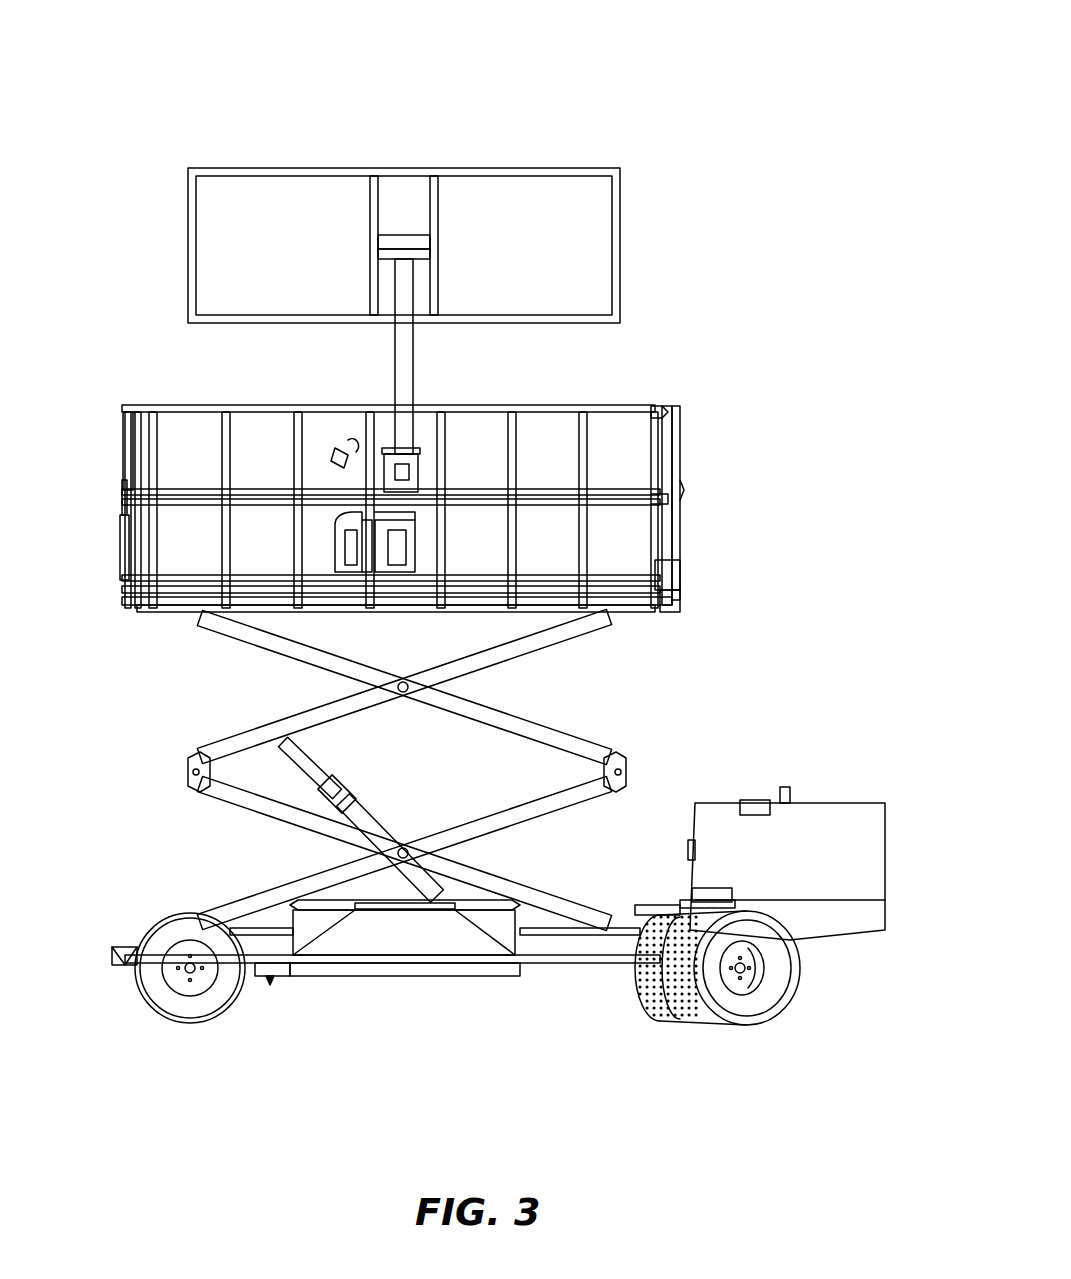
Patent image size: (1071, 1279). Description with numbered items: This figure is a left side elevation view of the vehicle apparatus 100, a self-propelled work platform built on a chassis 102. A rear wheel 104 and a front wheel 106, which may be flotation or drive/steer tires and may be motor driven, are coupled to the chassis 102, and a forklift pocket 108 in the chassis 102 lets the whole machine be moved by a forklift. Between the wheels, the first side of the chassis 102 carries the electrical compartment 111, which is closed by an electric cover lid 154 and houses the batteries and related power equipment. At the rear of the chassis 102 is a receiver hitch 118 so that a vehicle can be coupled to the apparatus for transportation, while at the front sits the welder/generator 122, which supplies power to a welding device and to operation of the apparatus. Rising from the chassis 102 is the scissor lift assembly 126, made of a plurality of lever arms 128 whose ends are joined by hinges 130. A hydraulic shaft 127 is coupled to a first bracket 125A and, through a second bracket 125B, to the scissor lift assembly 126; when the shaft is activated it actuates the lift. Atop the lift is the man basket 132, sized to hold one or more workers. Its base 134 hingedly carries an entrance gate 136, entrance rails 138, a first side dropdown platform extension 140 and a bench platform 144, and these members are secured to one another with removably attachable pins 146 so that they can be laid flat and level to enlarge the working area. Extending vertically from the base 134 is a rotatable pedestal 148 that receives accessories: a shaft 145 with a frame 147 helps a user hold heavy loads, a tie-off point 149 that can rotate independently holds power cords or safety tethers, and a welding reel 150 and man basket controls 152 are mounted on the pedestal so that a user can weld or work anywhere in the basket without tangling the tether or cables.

The vehicle apparatus 100 is at (198, 68).
The chassis 102 is at (392, 977).
The rear wheel 104 is at (178, 1015).
The front wheel 106 is at (778, 995).
The forklift pocket 108 is at (270, 985).
The electrical compartment 111 is at (355, 940).
The receiver hitch 118 is at (112, 957).
The welder/generator 122 is at (862, 855).
The first bracket 125A is at (500, 900).
The second bracket 125B is at (430, 686).
The scissor lift assembly 126 is at (570, 640).
The hydraulic shaft 127 is at (345, 805).
The lever arm 128 is at (556, 745).
The hinge 130 is at (186, 772).
The man basket 132 is at (680, 562).
The base 134 is at (175, 605).
The entrance gate 136 is at (125, 558).
The entrance rails 138 is at (128, 422).
The first side dropdown platform extension 140 is at (618, 408).
The bench platform 144 is at (680, 448).
The shaft 145 is at (413, 352).
The removably attachable pin 146 is at (665, 410).
The frame 147 is at (620, 182).
The rotatable pedestal 148 is at (408, 545).
The tie-off point 149 is at (412, 480).
The welding reel 150 is at (345, 535).
The man basket controls 152 is at (342, 445).
The electric cover lid 154 is at (412, 910).